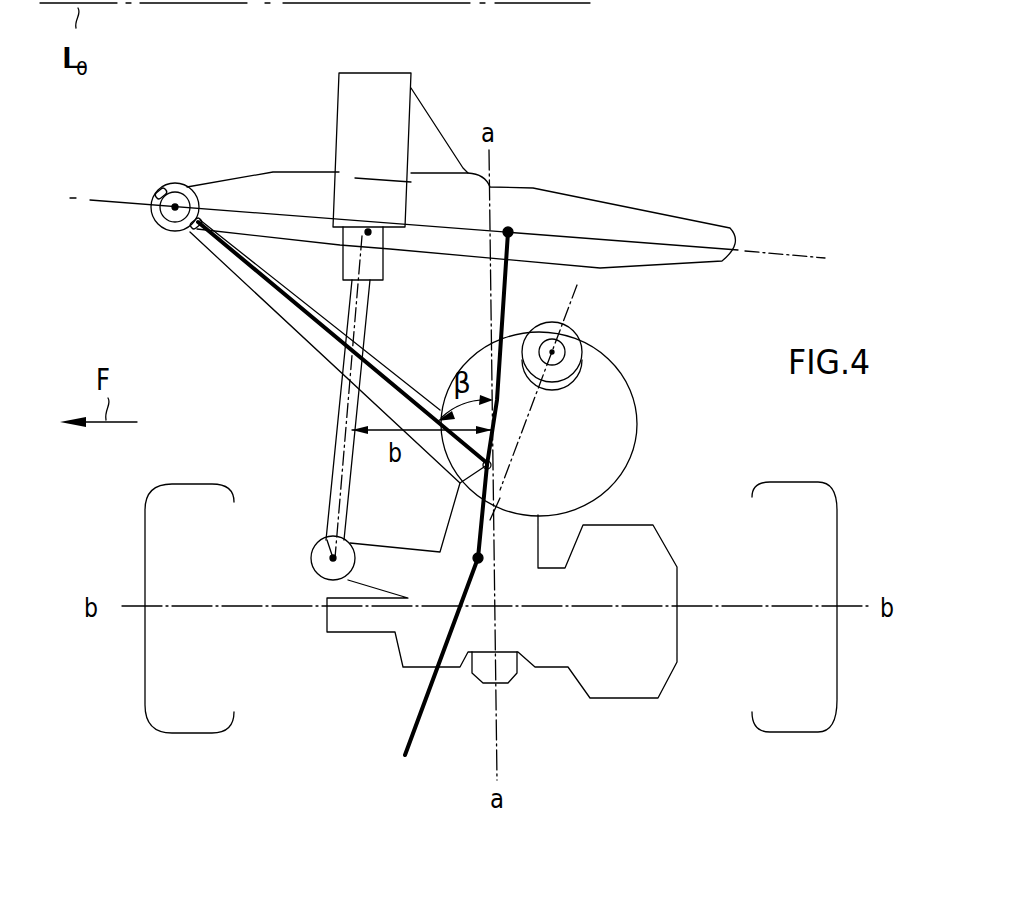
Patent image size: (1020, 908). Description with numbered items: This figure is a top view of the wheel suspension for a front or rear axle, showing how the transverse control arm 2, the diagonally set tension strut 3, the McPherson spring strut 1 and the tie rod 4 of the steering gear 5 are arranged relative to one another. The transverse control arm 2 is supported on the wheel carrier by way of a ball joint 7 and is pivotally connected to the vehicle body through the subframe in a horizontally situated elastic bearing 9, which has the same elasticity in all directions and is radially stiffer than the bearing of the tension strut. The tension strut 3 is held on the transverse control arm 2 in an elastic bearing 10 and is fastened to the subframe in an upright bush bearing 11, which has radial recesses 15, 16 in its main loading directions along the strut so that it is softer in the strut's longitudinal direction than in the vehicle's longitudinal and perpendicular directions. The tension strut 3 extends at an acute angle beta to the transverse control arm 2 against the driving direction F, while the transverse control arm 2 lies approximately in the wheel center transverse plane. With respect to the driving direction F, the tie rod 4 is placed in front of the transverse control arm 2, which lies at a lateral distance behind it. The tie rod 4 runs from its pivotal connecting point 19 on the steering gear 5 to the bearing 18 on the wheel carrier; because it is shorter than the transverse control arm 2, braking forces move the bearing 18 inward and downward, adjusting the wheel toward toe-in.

The McPherson spring strut 1 is at (622, 394).
The transverse control arm 2 is at (503, 283).
The tension strut 3 is at (270, 287).
The tie rod 4 is at (349, 412).
The steering gear 5 is at (380, 128).
The ball joint 7 is at (460, 531).
The elastic bearing 9 is at (514, 226).
The elastic bearing 10 is at (490, 466).
The bush bearing 11 is at (172, 212).
The radial recess 15 is at (163, 185).
The radial recess 16 is at (192, 232).
The bearing 18 is at (318, 555).
The pivotal connecting point 19 is at (368, 232).